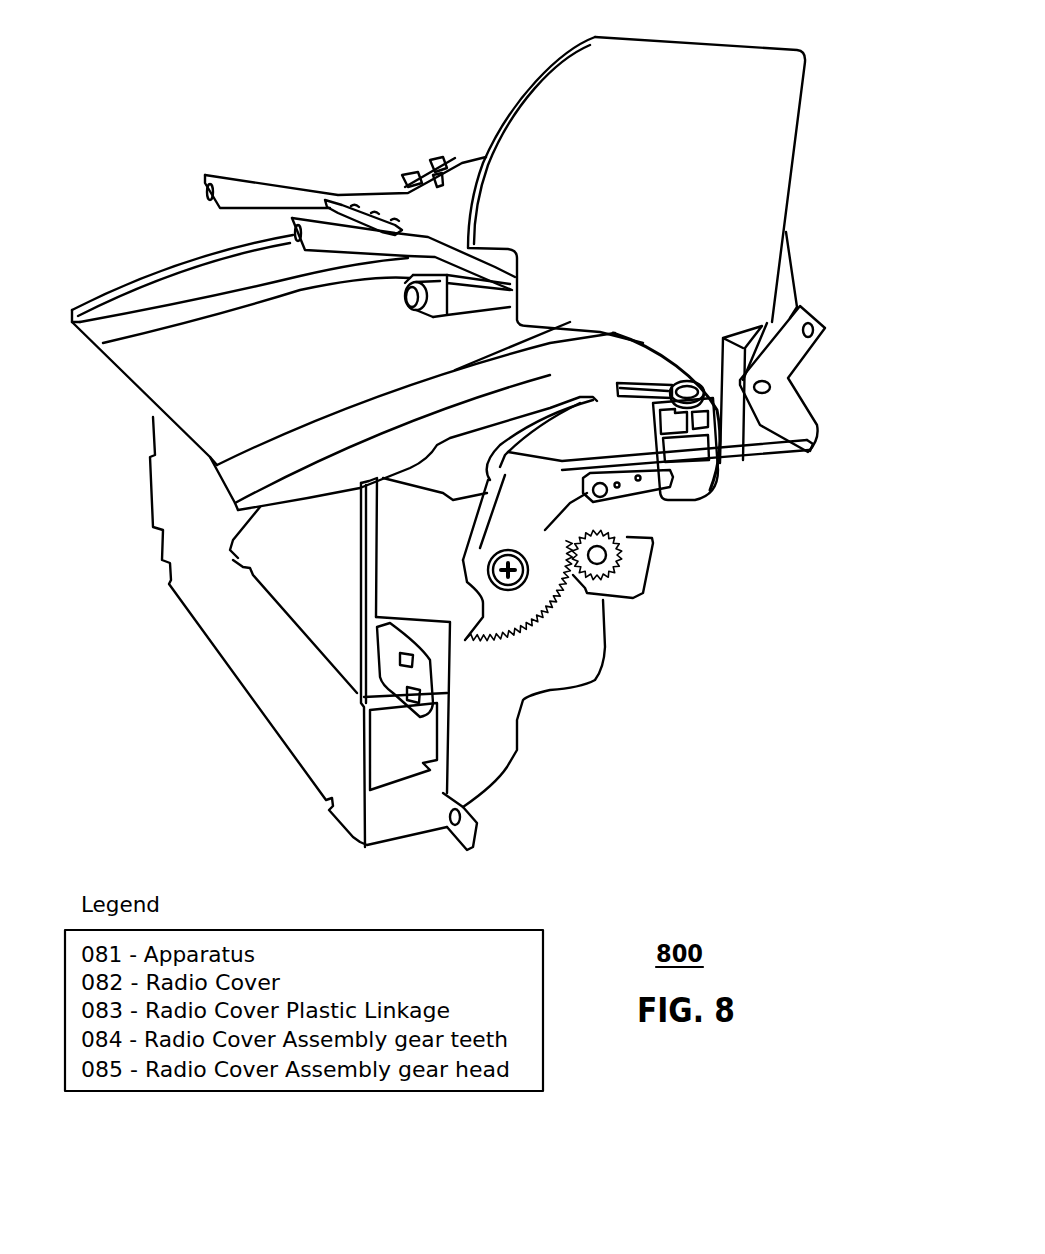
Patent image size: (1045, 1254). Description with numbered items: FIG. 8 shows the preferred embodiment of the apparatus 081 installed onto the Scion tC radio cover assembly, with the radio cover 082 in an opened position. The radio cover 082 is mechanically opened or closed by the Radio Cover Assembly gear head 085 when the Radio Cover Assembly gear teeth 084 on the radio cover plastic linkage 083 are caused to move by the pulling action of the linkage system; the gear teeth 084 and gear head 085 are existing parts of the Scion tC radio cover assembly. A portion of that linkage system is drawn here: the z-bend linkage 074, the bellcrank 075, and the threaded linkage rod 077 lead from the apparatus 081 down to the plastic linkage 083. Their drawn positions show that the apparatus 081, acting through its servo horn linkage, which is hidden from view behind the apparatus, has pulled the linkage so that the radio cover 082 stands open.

The apparatus 081 is at (783, 150).
The radio cover 082 is at (143, 397).
The radio cover plastic linkage 083 is at (623, 437).
The Radio Cover Assembly gear teeth 084 is at (540, 617).
The Radio Cover Assembly gear head 085 is at (607, 598).
The z-bend linkage 074 is at (792, 263).
The bellcrank 075 is at (777, 401).
The threaded linkage rod 077 is at (762, 465).